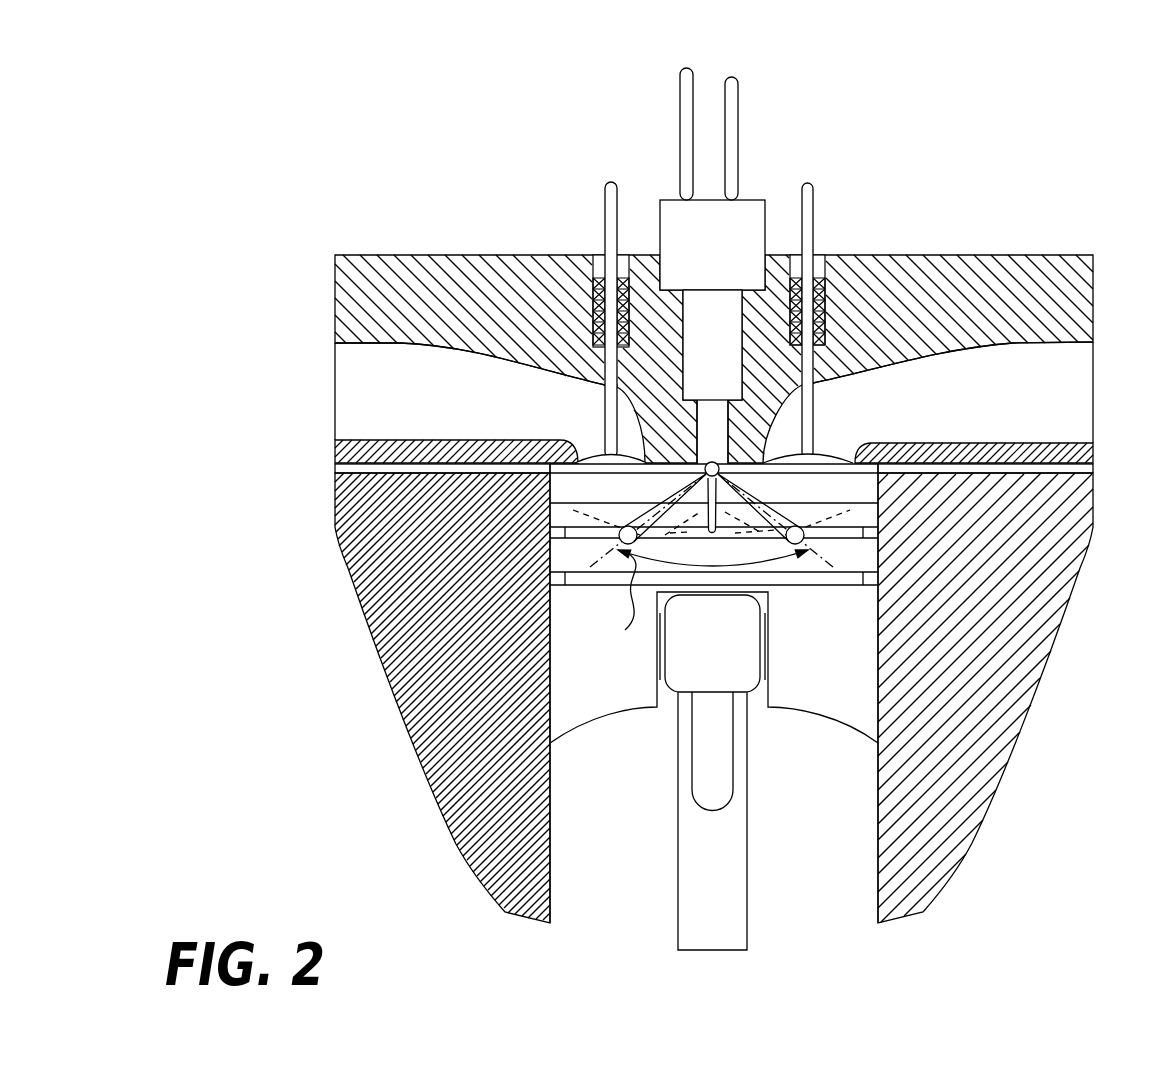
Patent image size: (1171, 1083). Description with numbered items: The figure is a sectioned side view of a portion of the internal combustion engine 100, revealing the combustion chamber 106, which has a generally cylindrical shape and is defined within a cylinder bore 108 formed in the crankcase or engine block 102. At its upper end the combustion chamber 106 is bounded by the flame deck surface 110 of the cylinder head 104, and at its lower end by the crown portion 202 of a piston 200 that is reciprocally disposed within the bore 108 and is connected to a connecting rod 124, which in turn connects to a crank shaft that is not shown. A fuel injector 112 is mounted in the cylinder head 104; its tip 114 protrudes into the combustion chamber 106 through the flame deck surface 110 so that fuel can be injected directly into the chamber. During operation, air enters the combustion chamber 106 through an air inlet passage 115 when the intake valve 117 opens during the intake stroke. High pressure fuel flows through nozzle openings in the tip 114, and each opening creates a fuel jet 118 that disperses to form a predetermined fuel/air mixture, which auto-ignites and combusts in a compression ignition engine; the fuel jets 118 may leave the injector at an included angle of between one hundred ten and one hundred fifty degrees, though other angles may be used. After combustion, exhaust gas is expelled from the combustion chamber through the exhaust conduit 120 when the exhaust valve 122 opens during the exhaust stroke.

The internal combustion engine 100 is at (704, 509).
The engine block 102 is at (1023, 667).
The cylinder head 104 is at (1080, 296).
The combustion chamber 106 is at (557, 495).
The cylinder bore 108 is at (878, 882).
The flame deck surface 110 is at (870, 463).
The fuel injector 112 is at (752, 208).
The tip 114 is at (709, 464).
The air inlet passage 115 is at (357, 400).
The intake valve 117 is at (597, 448).
The fuel jet 118 is at (793, 522).
The exhaust conduit 120 is at (1080, 380).
The exhaust valve 122 is at (810, 458).
The connecting rod 124 is at (727, 848).
The piston 200 is at (808, 663).
The crown portion 202 is at (557, 516).